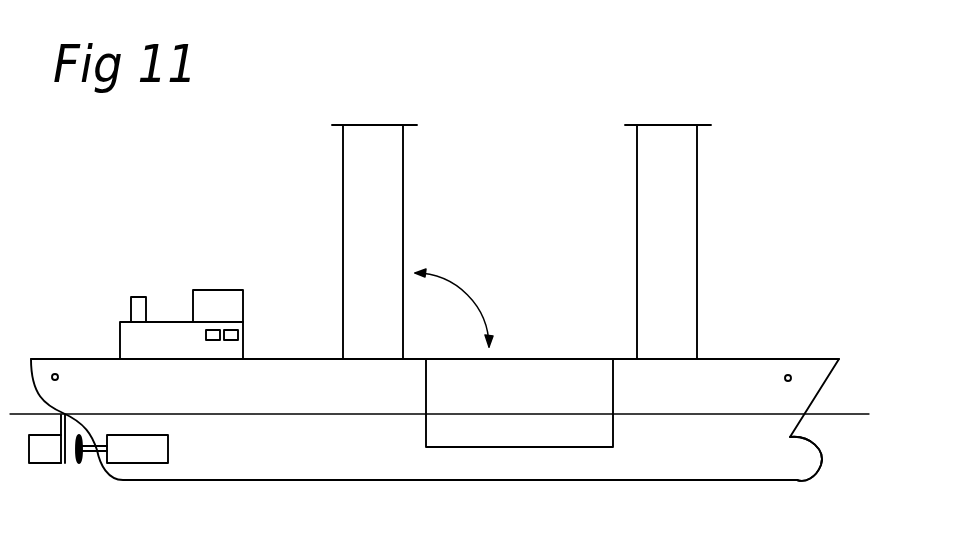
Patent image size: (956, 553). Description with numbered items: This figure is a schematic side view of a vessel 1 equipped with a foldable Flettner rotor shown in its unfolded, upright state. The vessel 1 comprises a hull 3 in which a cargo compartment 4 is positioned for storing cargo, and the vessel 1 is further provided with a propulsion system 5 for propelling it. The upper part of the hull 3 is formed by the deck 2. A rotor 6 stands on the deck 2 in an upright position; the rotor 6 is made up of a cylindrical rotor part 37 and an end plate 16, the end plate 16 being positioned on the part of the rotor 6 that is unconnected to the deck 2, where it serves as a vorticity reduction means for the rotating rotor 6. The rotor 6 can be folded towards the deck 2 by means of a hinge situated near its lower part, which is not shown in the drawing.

The vessel 1 is at (578, 83).
The deck 2 is at (562, 358).
The hull 3 is at (791, 467).
The cargo compartment 4 is at (507, 428).
The propulsion system 5 is at (147, 450).
The rotor 6 is at (719, 167).
The end plate 16 is at (396, 125).
The cylindrical rotor part 37 is at (357, 215).